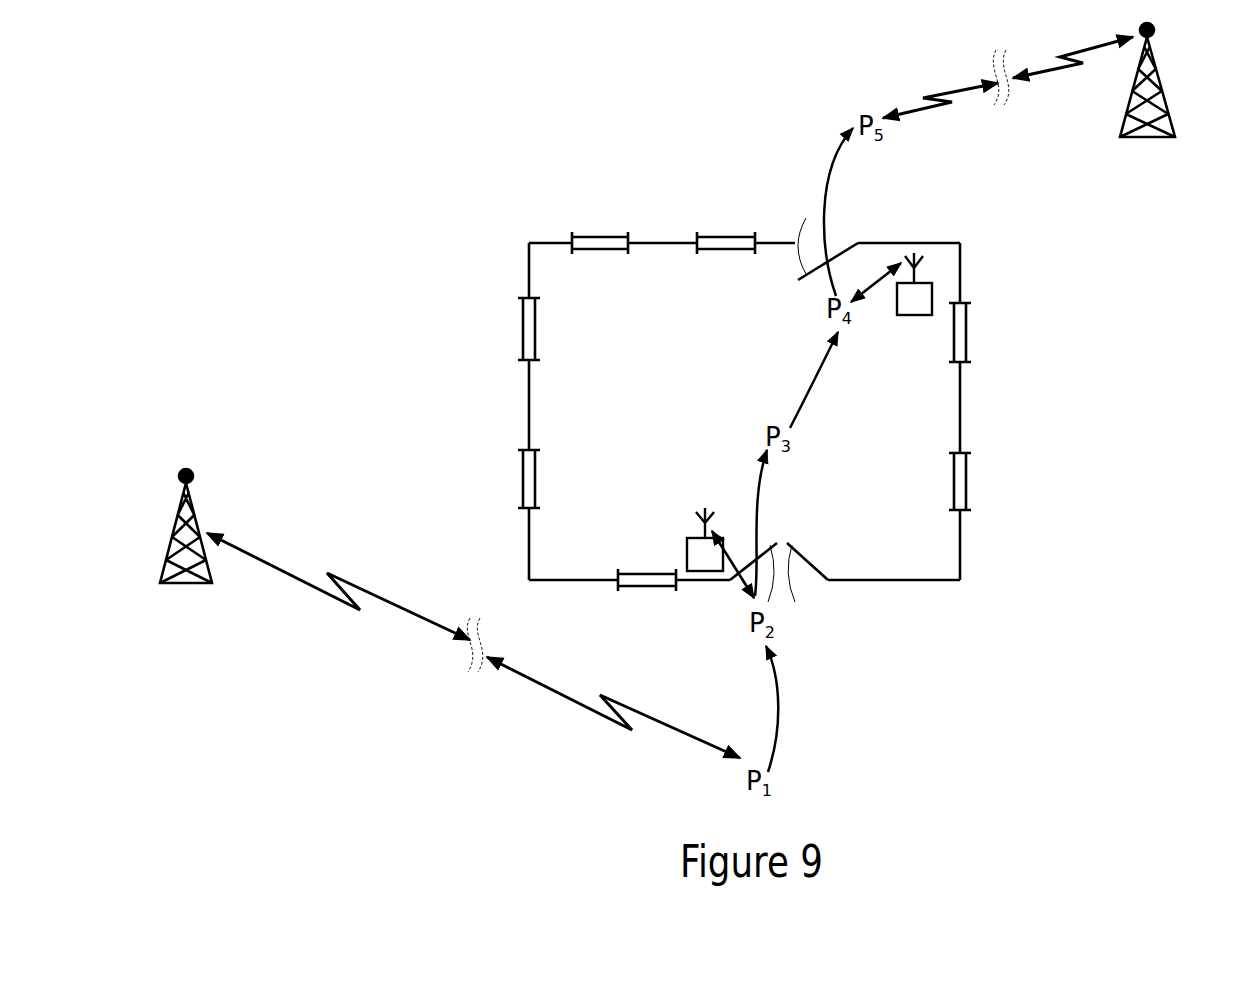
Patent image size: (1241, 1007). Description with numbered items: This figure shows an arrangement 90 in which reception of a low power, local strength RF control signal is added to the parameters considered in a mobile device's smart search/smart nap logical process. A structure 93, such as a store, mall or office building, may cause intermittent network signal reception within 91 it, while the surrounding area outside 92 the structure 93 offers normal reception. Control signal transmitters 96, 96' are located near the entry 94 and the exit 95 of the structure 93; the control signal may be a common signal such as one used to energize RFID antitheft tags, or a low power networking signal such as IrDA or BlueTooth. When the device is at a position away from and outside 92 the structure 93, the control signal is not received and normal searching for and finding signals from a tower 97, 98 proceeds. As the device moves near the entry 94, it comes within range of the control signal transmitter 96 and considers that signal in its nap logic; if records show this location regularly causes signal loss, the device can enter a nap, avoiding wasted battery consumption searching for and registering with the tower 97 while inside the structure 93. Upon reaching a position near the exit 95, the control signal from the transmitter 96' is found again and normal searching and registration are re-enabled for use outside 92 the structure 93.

The arrangement 90 is at (380, 126).
The within the structure 91 is at (612, 329).
The outside the structure 92 is at (955, 709).
The structure 93 is at (529, 243).
The entry 94 is at (812, 572).
The exit 95 is at (858, 243).
The control signal transmitter 96 is at (674, 533).
The control signal transmitter 96' is at (907, 313).
The tower 97 is at (167, 540).
The tower 98 is at (1165, 82).